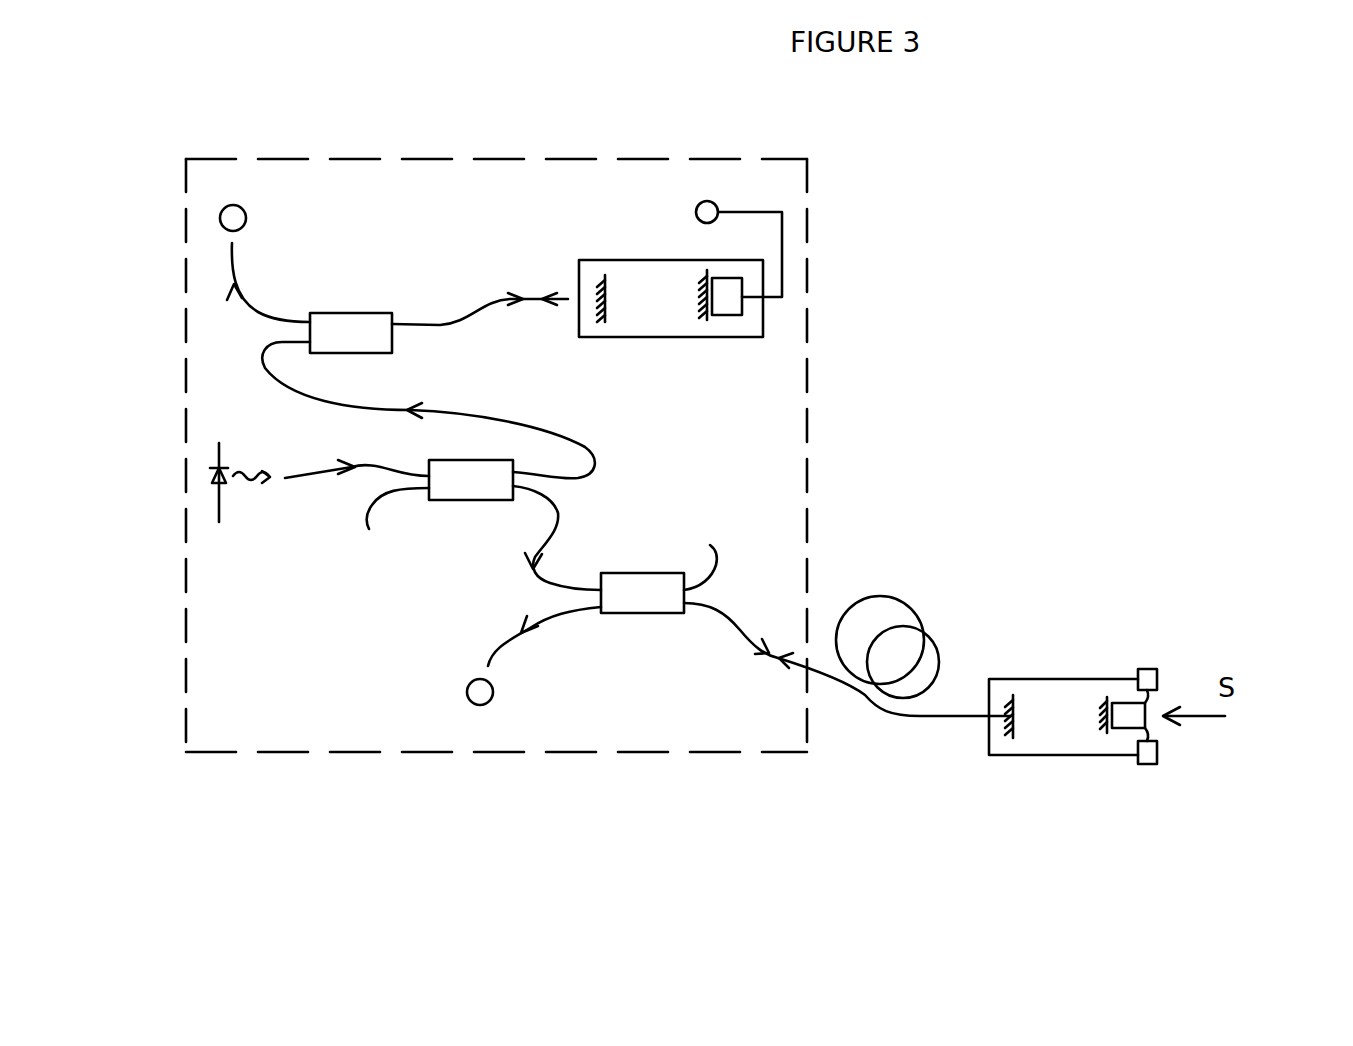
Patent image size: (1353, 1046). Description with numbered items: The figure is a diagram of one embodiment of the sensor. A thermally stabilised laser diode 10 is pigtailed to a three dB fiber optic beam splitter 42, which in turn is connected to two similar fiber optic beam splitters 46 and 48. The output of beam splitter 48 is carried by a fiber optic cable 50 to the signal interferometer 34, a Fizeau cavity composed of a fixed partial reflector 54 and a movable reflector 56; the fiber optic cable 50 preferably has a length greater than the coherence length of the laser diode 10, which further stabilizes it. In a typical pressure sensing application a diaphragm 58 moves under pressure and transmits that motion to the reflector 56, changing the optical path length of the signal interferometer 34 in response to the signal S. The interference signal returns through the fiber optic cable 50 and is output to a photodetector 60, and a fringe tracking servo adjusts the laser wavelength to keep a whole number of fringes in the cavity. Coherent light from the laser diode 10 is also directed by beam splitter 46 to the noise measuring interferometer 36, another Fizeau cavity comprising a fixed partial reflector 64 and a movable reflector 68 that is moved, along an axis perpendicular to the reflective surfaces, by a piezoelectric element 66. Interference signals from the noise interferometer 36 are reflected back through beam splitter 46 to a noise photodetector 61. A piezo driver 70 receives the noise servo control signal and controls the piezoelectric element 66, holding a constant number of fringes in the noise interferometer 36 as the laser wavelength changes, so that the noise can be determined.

The laser diode 10 is at (220, 457).
The signal interferometer 34 is at (1073, 761).
The noise measuring interferometer 36 is at (641, 343).
The 3 dB fiber optic beam splitter 42 is at (470, 505).
The fiber optic beam splitter 46 is at (384, 308).
The fiber optic beam splitter 48 is at (664, 624).
The fiber optic cable 50 is at (892, 595).
The fixed partial reflector 54 is at (1013, 698).
The movable reflector 56 is at (1107, 702).
The diaphragm 58 is at (1147, 732).
The photodetector 60 is at (490, 701).
The noise photodetector 61 is at (243, 230).
The fixed partial reflector 64 is at (613, 275).
The piezoelectric element 66 is at (737, 309).
The movable reflector 68 is at (703, 281).
The piezo driver 70 is at (702, 178).